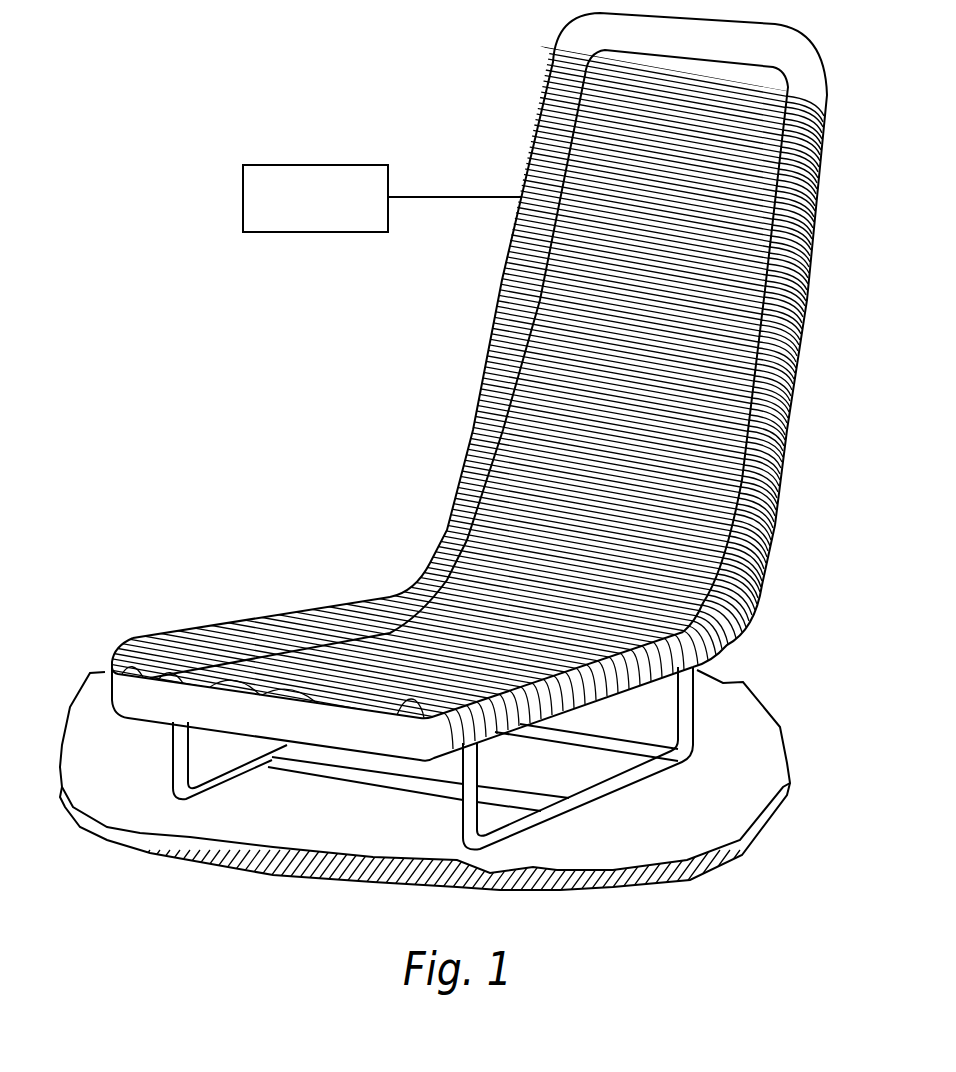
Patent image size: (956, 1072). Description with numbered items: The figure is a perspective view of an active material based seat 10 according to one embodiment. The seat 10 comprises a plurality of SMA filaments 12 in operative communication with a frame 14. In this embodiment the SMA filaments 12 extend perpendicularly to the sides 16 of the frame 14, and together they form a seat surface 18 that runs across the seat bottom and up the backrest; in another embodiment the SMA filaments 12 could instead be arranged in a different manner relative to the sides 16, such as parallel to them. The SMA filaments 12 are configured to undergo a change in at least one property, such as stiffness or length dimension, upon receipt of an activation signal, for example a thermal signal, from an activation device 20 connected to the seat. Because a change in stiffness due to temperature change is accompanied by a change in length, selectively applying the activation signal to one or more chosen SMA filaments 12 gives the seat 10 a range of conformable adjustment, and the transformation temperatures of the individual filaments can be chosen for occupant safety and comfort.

The active material based seat 10 is at (168, 82).
The SMA filaments 12 is at (552, 138).
The frame 14 is at (177, 762).
The sides of the frame 16 is at (427, 560).
The seat surface 18 is at (361, 640).
The activation device 20 is at (313, 165).